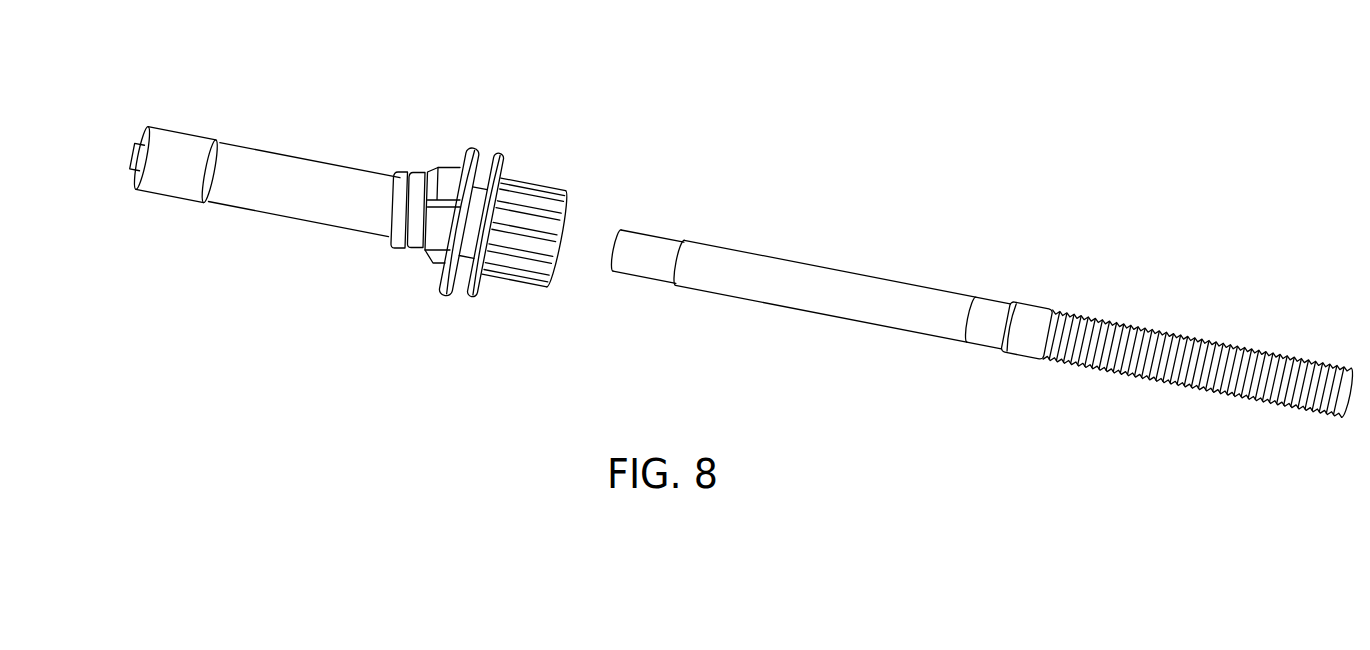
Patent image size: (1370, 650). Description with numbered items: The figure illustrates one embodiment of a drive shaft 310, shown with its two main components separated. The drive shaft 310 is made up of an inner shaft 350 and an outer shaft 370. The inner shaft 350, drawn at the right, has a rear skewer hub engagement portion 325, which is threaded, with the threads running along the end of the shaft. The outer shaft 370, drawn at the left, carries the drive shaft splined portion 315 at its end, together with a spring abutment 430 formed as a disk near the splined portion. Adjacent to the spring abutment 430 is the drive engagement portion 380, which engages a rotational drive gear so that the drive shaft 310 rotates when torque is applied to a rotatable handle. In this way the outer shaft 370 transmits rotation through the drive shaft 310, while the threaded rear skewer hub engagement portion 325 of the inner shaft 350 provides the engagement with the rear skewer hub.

The outer shaft 370 is at (305, 100).
The drive engagement portion 380 is at (432, 264).
The spring abutment 430 is at (498, 152).
The drive shaft splined portion 315 is at (545, 185).
The drive shaft 310 is at (669, 189).
The inner shaft 350 is at (931, 240).
The rear skewer hub engagement portion 325 is at (1246, 332).